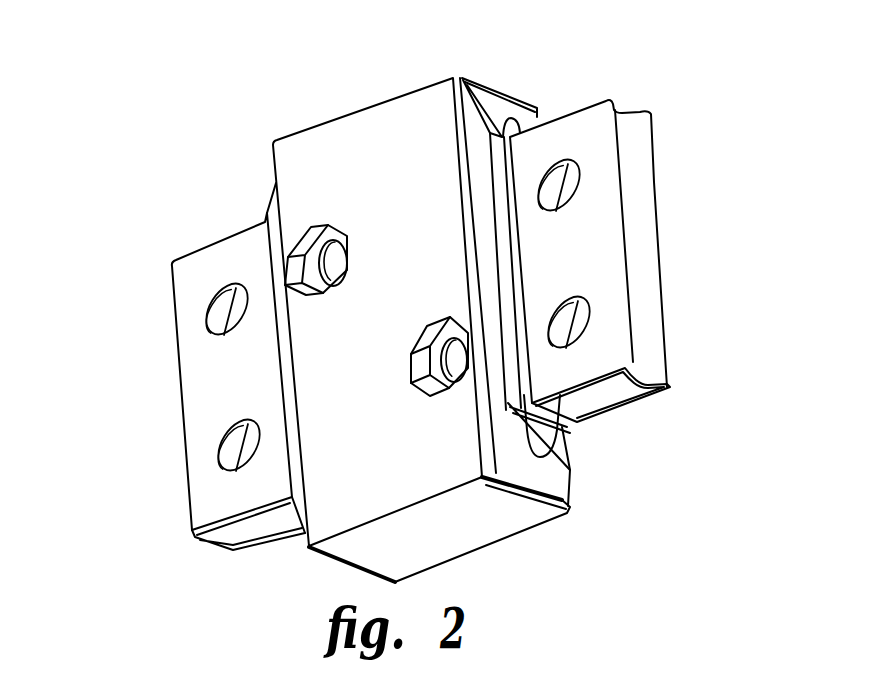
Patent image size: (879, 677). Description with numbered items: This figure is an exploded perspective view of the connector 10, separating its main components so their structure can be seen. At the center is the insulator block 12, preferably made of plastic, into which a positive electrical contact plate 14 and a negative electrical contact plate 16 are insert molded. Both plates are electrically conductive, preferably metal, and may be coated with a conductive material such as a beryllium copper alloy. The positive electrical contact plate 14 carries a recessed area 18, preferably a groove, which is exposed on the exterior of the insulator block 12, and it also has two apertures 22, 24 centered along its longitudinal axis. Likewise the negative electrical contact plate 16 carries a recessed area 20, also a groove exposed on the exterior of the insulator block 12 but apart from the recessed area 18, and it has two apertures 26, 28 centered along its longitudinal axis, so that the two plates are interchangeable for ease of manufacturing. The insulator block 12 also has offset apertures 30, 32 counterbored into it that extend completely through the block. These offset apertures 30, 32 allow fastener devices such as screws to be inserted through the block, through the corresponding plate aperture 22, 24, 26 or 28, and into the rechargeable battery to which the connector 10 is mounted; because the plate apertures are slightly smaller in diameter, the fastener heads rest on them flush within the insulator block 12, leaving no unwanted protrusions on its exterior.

The connector 10 is at (493, 69).
The insulator block 12 is at (308, 535).
The positive electrical contact plate 14 is at (607, 238).
The negative electrical contact plate 16 is at (213, 500).
The recessed area 18 is at (647, 323).
The recessed area 20 is at (215, 537).
The aperture 22 is at (578, 179).
The aperture 24 is at (592, 320).
The aperture 26 is at (208, 308).
The aperture 28 is at (222, 441).
The offset aperture 30 is at (316, 223).
The offset aperture 32 is at (445, 396).